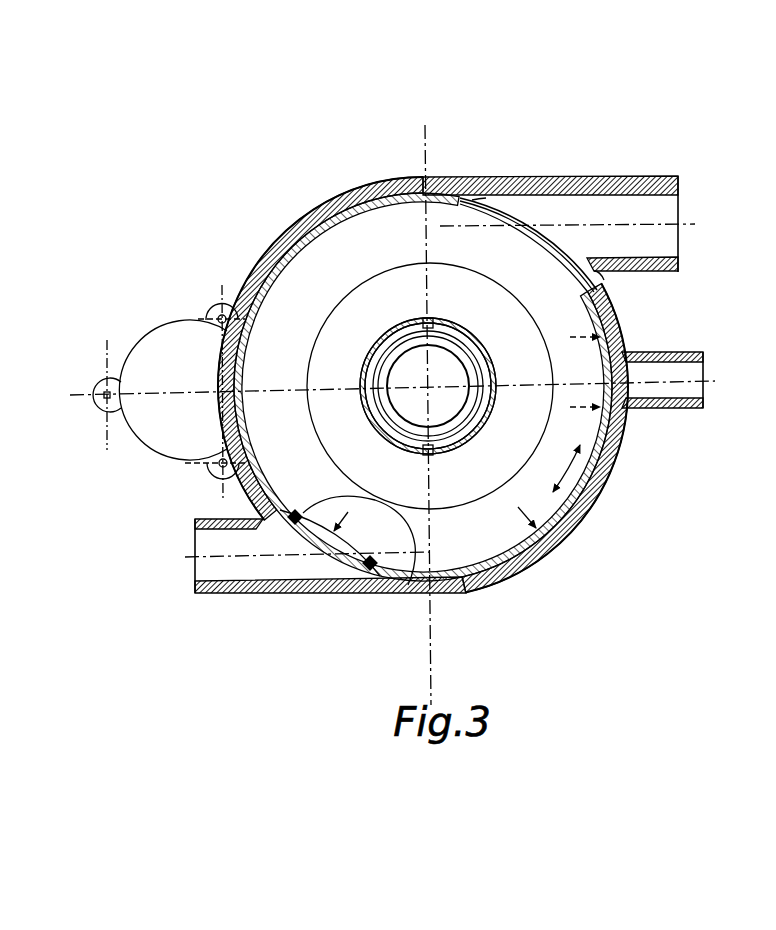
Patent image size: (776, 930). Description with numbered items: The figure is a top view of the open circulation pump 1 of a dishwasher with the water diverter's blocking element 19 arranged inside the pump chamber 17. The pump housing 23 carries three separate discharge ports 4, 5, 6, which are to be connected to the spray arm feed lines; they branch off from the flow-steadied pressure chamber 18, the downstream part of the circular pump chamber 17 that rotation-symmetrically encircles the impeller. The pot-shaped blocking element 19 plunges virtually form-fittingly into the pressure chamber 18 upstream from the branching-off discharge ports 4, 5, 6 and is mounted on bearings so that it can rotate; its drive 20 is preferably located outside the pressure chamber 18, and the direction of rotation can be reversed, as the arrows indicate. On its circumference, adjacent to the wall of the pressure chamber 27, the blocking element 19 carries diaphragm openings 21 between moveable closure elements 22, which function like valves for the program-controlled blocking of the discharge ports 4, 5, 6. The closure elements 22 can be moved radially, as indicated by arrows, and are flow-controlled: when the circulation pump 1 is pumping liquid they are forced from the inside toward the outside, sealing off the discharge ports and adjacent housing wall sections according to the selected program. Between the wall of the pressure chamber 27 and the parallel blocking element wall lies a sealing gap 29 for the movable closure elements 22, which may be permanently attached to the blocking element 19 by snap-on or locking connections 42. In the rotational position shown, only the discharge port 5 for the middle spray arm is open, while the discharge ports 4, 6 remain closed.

The circulation pump 1 is at (570, 166).
The discharge port 4 is at (203, 594).
The discharge port 5 is at (675, 178).
The discharge port 6 is at (697, 406).
The pump chamber 17 is at (492, 545).
The pressure chamber 18 is at (438, 470).
The blocking element 19 is at (605, 497).
The drive 20 is at (183, 360).
The diaphragm openings 21 is at (227, 445).
The closure elements 22 is at (617, 332).
The pump housing 23 is at (308, 233).
The wall of the pressure chamber 27 is at (365, 200).
The sealing gap 29 is at (270, 248).
The snap-on or locking connections 42 is at (403, 590).